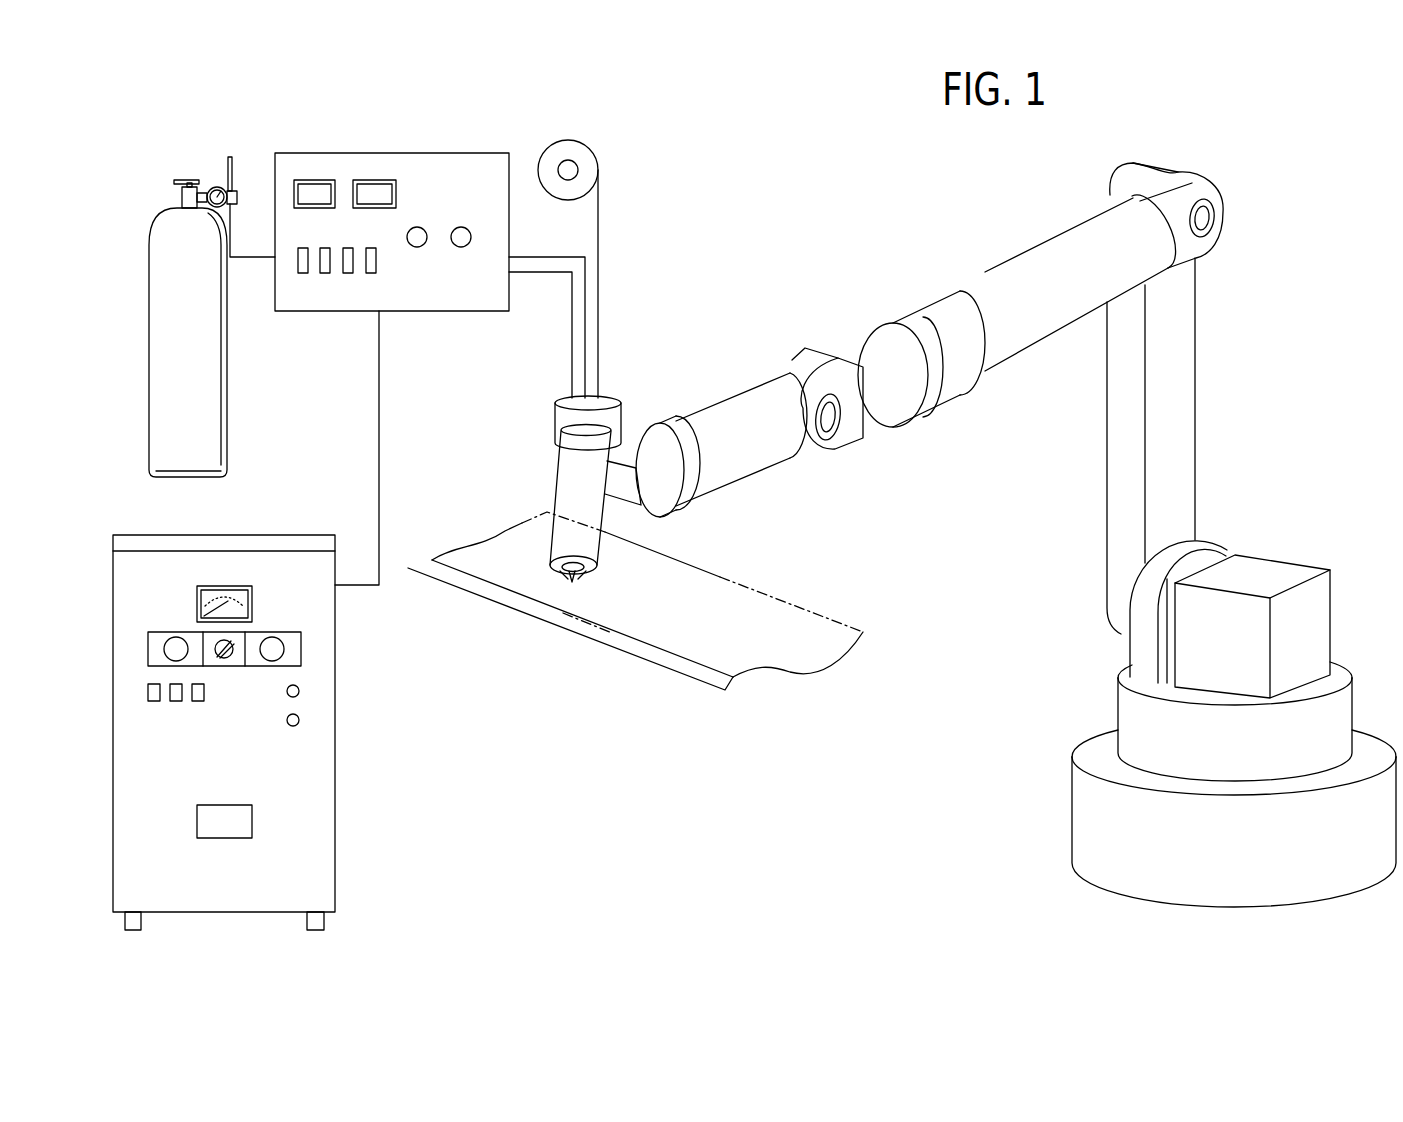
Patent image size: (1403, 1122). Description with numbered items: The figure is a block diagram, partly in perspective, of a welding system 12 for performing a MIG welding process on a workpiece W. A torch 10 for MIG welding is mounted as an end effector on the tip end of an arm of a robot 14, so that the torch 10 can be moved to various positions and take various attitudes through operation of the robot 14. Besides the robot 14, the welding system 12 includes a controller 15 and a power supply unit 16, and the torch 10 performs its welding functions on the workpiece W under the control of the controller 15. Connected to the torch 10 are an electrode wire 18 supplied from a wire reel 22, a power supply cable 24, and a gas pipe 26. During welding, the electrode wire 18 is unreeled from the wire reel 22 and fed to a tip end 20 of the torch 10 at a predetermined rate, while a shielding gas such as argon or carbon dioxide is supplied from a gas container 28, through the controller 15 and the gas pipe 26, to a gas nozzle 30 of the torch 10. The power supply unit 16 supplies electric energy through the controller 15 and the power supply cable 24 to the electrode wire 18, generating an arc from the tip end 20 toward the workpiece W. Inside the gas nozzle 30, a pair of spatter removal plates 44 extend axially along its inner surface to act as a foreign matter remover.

The torch 10 is at (551, 532).
The welding system 12 is at (872, 161).
The robot 14 is at (1233, 407).
The controller 15 is at (452, 160).
The power supply unit 16 is at (142, 560).
The electrode wire 18 is at (598, 311).
The tip end 20 is at (593, 578).
The wire reel 22 is at (590, 151).
The power supply cable 24 is at (537, 257).
The gas pipe 26 is at (540, 273).
The gas container 28 is at (170, 230).
The gas nozzle 30 is at (565, 494).
The spatter removal plates 44 is at (557, 576).
The workpiece W is at (610, 650).